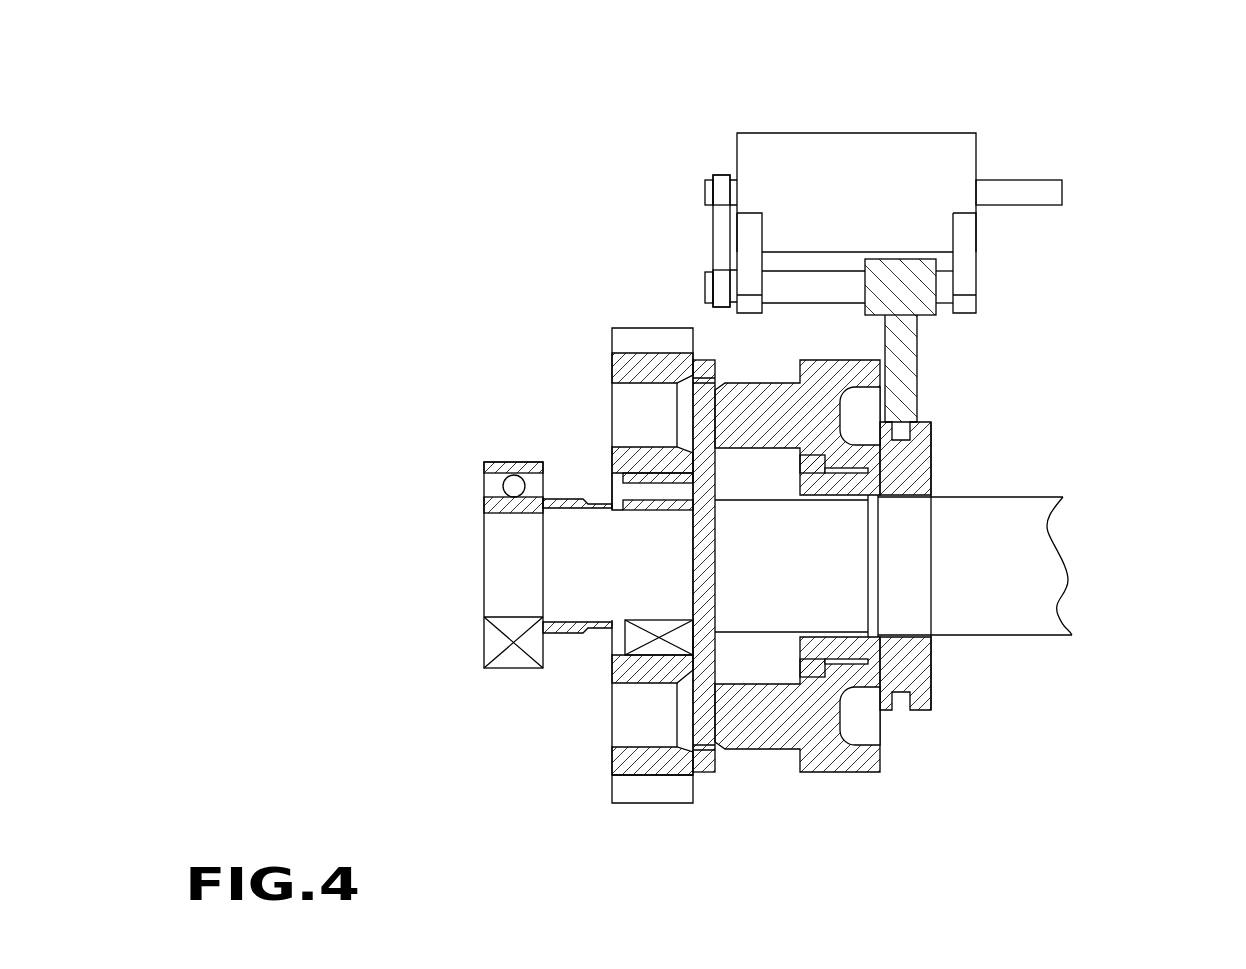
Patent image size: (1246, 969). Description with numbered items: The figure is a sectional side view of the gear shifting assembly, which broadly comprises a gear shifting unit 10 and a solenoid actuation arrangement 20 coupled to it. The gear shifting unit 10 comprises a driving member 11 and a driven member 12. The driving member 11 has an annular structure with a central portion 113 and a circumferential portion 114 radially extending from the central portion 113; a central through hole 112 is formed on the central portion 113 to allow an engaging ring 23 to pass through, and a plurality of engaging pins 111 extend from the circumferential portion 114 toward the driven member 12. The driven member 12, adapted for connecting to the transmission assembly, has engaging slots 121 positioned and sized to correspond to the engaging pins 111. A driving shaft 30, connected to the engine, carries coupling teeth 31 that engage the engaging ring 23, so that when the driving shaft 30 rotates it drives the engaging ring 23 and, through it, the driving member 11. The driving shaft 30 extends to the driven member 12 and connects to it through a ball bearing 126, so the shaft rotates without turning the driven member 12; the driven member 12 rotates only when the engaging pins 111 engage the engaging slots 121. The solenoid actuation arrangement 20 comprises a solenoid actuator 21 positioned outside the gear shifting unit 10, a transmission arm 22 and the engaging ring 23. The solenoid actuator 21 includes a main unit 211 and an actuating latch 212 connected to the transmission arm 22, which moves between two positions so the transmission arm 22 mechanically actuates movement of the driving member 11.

The gear shifting unit 10 is at (784, 473).
The driving member 11 is at (821, 459).
The engaging pins 111 is at (763, 730).
The central through hole 112 is at (797, 461).
The central portion 113 is at (845, 666).
The circumferential portion 114 is at (801, 364).
The driven member 12 is at (523, 618).
The engaging slots 121 is at (622, 803).
The ball bearing 126 is at (627, 473).
The solenoid actuation arrangement 20 is at (955, 220).
The solenoid actuator 21 is at (883, 166).
The main unit 211 is at (835, 160).
The actuating latch 212 is at (905, 283).
The transmission arm 22 is at (900, 345).
The engaging ring 23 is at (920, 465).
The driving shaft 30 is at (965, 566).
The coupling teeth 31 is at (790, 630).